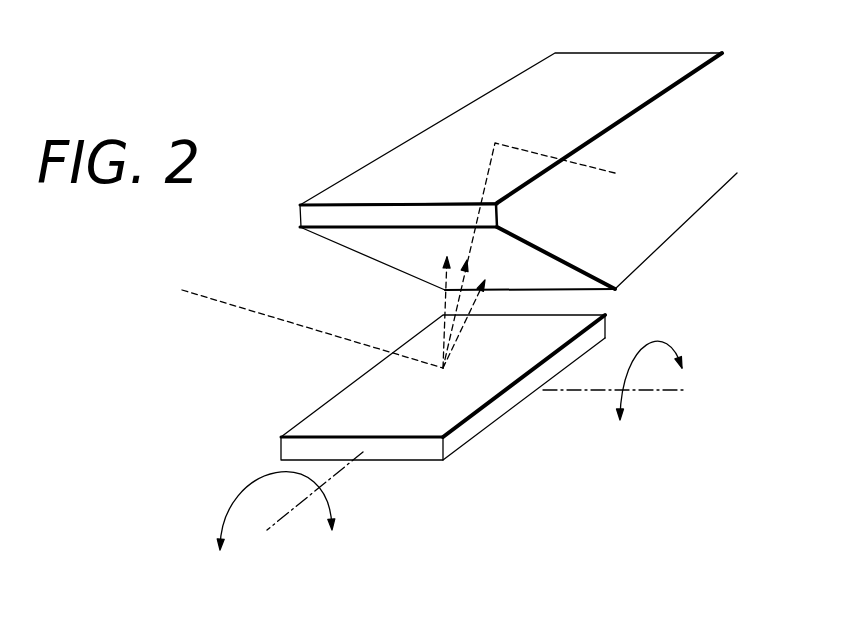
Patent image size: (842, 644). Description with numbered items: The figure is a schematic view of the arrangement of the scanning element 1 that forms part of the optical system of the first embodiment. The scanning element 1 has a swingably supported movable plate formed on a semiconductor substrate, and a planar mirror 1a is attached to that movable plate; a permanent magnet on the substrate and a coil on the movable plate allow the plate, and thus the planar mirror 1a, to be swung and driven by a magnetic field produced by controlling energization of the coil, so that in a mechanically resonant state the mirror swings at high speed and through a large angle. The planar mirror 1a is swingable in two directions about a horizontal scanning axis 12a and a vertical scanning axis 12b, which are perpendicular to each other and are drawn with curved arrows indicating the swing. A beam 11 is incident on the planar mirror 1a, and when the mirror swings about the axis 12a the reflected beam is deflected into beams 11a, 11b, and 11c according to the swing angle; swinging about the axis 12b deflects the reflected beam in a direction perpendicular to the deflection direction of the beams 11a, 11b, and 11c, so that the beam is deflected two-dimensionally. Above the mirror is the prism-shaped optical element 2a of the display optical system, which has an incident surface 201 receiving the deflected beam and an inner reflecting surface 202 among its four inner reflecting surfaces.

The scanning element 1 is at (488, 444).
The planar mirror 1a is at (487, 390).
The prism-shaped optical element 2a is at (683, 203).
The incident surface 201 is at (572, 282).
The inner reflecting surface 202 is at (508, 90).
The beam 11 is at (250, 310).
The reflected beam 11a is at (490, 158).
The reflected beam 11b is at (443, 300).
The reflected beam 11c is at (478, 300).
The horizontal scanning axis 12a is at (660, 390).
The vertical scanning axis 12b is at (295, 517).